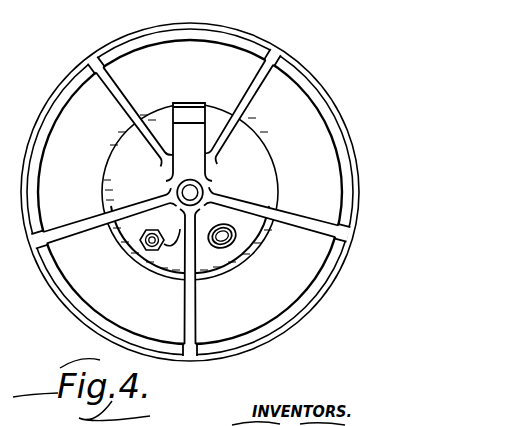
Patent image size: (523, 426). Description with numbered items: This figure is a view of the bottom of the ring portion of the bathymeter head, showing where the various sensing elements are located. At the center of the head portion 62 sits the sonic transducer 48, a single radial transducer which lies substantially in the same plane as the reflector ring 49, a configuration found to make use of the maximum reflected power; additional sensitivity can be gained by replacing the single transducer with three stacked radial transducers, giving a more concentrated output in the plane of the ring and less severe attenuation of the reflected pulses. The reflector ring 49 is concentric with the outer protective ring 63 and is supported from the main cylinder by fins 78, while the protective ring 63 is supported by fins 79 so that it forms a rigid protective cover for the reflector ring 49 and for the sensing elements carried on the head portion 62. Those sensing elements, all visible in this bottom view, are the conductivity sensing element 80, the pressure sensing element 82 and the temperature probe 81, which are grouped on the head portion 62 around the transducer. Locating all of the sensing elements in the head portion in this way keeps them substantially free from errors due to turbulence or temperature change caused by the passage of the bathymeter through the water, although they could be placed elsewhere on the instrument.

The sonic transducer 48 is at (191, 193).
The reflector ring 49 is at (313, 102).
The head portion 62 is at (130, 173).
The protective ring 63 is at (350, 137).
The fins 78 is at (259, 93).
The fins 79 is at (280, 53).
The conductivity sensing element 80 is at (199, 115).
The temperature probe 81 is at (140, 240).
The pressure sensing element 82 is at (224, 238).